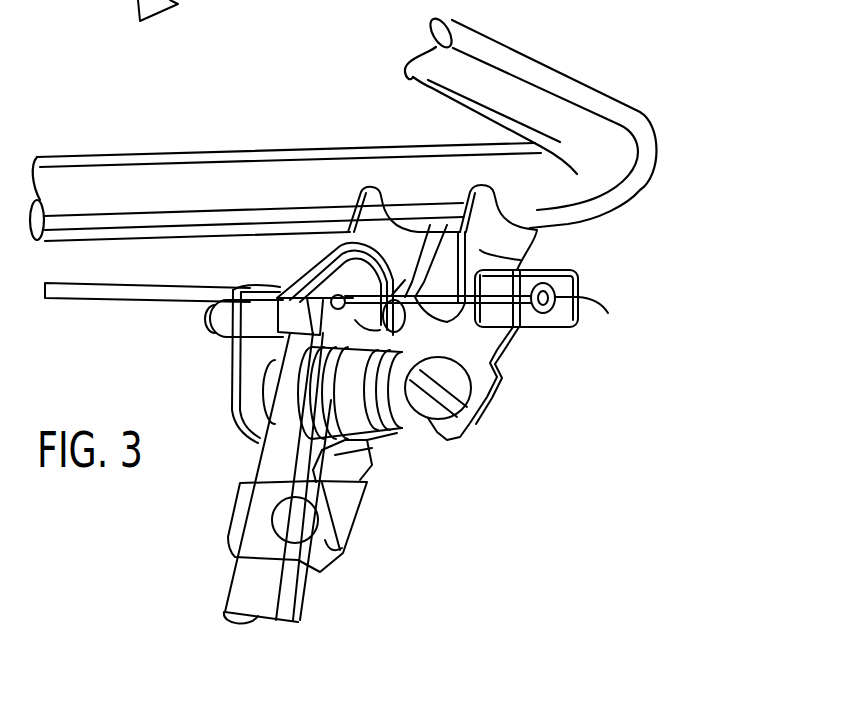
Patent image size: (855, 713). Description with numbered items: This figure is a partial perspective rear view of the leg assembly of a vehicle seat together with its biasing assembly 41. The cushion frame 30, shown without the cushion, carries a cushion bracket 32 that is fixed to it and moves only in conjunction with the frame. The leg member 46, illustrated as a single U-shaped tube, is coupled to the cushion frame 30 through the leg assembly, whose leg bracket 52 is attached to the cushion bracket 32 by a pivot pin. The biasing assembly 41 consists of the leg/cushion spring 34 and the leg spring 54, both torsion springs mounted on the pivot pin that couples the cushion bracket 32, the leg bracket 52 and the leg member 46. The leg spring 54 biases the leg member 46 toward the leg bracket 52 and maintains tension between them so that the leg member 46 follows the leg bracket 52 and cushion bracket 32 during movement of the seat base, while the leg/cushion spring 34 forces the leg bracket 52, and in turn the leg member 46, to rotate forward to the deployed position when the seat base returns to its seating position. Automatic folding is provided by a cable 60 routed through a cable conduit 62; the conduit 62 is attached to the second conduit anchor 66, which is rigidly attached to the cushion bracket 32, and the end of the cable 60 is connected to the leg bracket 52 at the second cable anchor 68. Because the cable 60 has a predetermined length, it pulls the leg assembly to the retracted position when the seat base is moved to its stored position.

The cushion frame 30 is at (527, 68).
The cushion bracket 32 is at (508, 240).
The leg/cushion spring 34 is at (400, 433).
The biasing assembly 41 is at (505, 446).
The leg member 46 is at (238, 584).
The leg bracket 52 is at (350, 458).
The leg spring 54 is at (353, 523).
The cable 60 is at (503, 328).
The cable conduit 62 is at (83, 290).
The second conduit anchor 66 is at (491, 317).
The second cable anchor 68 is at (347, 288).